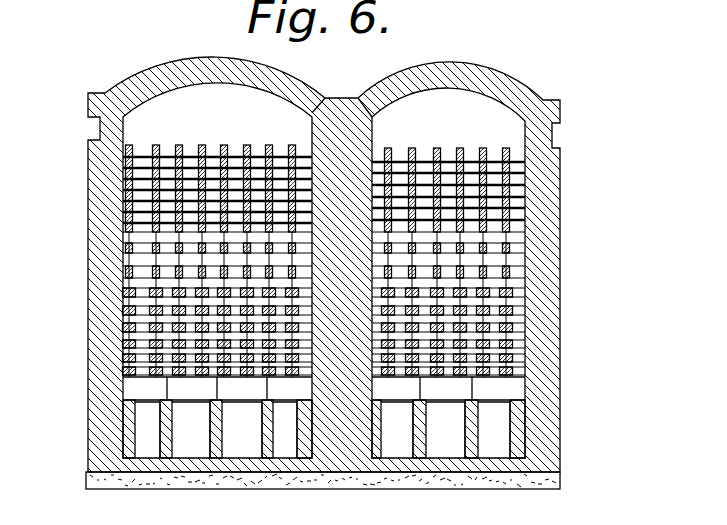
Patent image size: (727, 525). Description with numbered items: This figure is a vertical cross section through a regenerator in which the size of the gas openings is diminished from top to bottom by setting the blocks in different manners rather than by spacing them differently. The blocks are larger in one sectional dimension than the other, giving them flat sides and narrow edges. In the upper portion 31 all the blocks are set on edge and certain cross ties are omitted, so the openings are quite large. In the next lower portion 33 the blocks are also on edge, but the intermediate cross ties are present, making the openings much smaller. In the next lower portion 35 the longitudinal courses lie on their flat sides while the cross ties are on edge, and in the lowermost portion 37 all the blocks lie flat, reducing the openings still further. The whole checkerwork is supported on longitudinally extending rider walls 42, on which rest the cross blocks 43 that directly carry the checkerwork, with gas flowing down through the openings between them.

The upper portion of the structure 31 is at (520, 205).
The next lower portion of the structure 33 is at (520, 263).
The next lower portion of the structure 35 is at (520, 325).
The lowermost portion of the structure 37 is at (520, 359).
The rider walls 42 is at (210, 458).
The cross blocks 43 is at (140, 387).